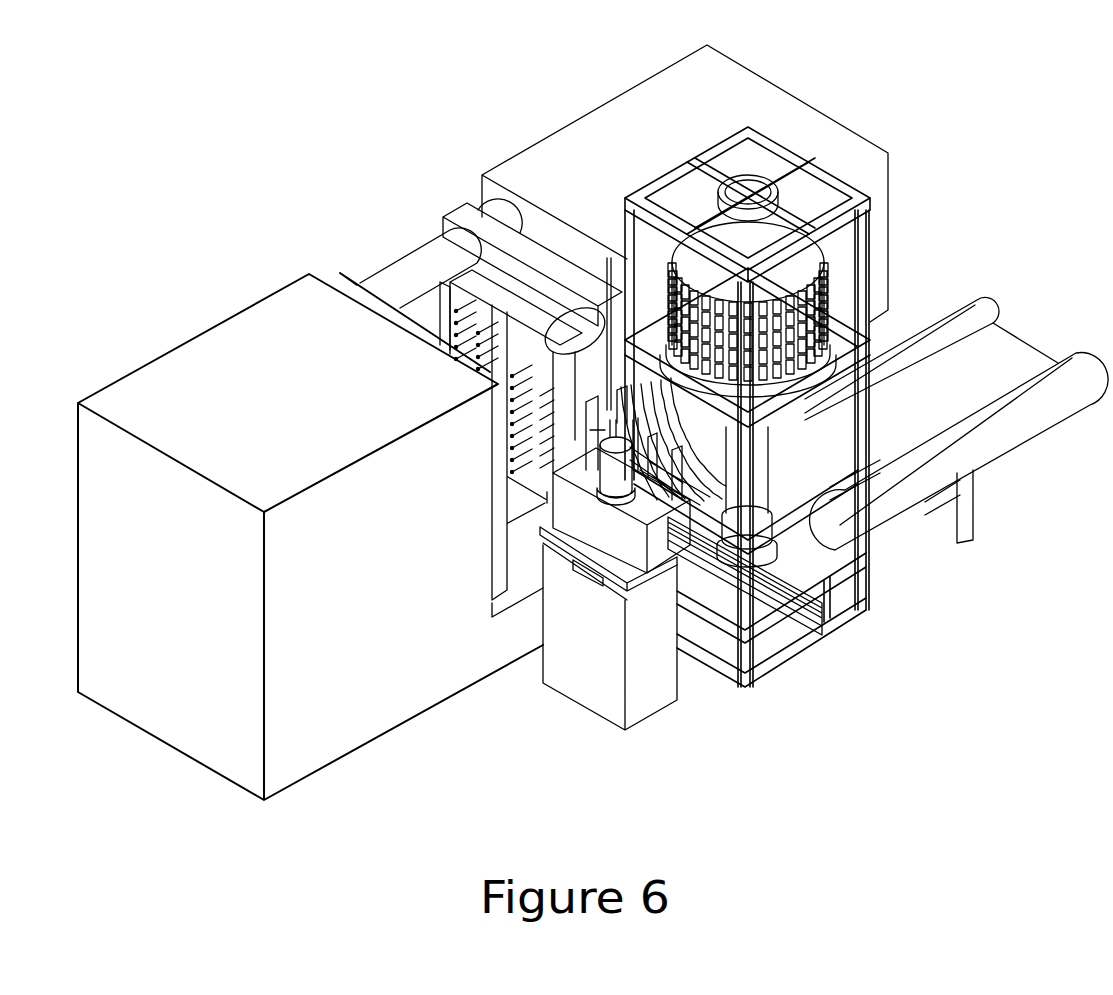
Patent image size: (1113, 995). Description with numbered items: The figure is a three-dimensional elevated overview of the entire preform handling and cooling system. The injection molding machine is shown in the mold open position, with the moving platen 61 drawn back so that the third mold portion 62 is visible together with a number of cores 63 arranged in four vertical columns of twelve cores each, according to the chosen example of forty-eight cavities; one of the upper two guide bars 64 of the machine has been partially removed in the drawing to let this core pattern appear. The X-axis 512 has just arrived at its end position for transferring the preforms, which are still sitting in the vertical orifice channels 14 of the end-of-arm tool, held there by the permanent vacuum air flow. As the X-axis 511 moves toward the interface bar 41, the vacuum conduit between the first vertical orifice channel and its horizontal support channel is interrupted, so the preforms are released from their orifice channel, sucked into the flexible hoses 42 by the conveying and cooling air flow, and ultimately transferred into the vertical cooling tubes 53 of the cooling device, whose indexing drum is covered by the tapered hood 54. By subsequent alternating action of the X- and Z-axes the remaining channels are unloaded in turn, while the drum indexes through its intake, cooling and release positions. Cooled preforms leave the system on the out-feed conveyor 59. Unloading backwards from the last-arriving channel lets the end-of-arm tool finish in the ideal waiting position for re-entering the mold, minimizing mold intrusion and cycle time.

The vertical orifice channels 14 is at (670, 443).
The interface bar 41 is at (612, 400).
The flexible hoses 42 is at (640, 397).
The vertical cooling tubes 53 is at (820, 312).
The tapered hood 54 is at (807, 260).
The out-feed conveyor 59 is at (962, 378).
The moving platen 61 is at (488, 230).
The third mold portion 62 is at (478, 293).
The cores 63 is at (428, 288).
The upper guide bars 64 is at (392, 286).
The X-axis 511 is at (658, 552).
The X-axis 512 is at (818, 630).